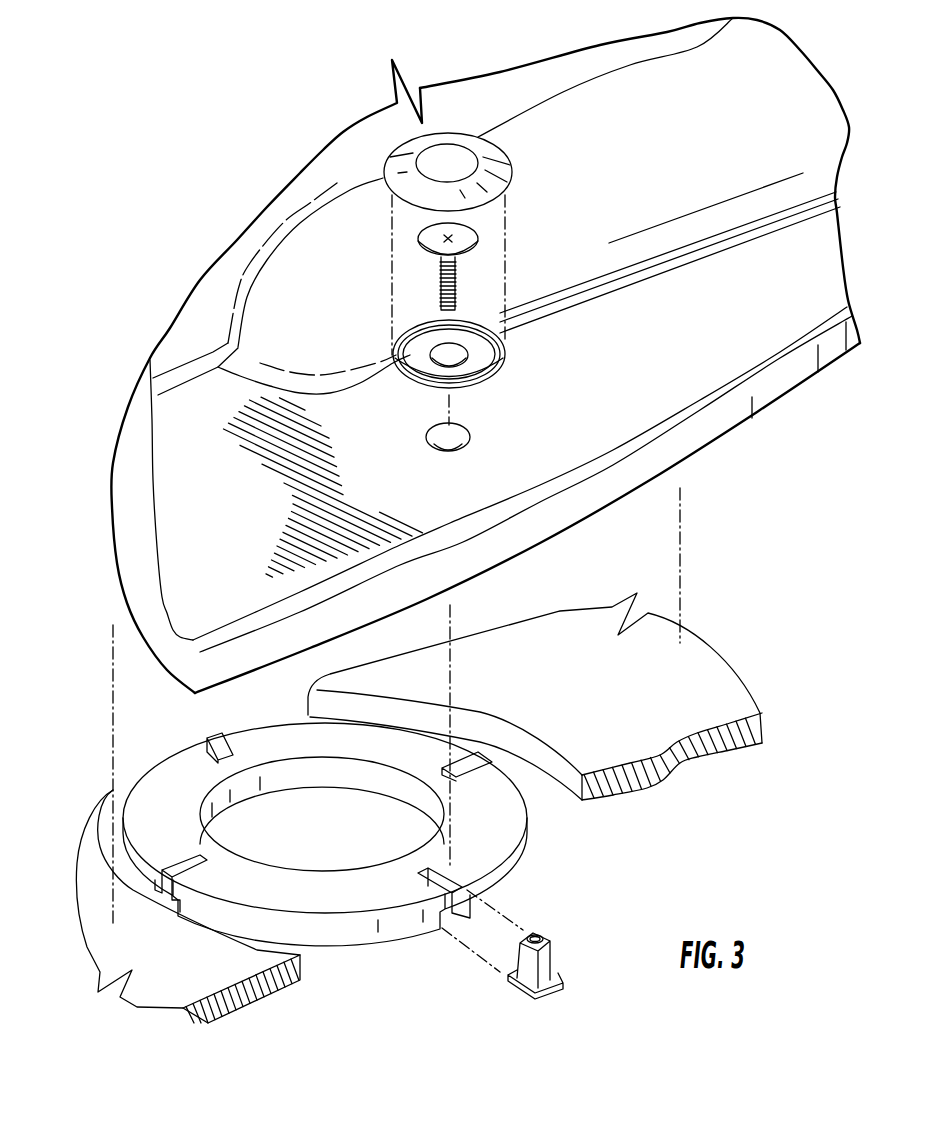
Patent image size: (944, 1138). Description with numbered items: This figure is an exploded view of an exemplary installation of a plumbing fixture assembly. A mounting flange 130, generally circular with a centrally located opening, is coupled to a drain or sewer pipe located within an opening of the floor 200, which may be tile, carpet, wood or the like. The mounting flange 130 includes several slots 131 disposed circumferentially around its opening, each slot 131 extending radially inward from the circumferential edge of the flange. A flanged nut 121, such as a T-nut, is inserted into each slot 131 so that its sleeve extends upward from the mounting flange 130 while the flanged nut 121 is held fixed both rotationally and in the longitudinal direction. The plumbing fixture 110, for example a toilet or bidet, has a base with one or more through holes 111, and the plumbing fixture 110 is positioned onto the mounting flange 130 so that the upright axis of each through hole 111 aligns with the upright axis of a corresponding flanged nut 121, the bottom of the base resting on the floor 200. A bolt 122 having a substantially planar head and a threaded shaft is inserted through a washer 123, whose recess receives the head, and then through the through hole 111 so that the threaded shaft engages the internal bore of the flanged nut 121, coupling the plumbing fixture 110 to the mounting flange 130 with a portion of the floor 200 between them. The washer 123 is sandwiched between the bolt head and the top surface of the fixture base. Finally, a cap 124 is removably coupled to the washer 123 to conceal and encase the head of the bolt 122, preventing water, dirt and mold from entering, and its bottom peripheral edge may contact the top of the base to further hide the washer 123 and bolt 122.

The plumbing fixture 110 is at (663, 123).
The through holes 111 is at (462, 433).
The flanged nut 121 is at (553, 960).
The bolt 122 is at (456, 283).
The washer 123 is at (505, 356).
The cap 124 is at (500, 145).
The mounting flange 130 is at (362, 943).
The slots 131 is at (179, 867).
The floor 200 is at (702, 697).